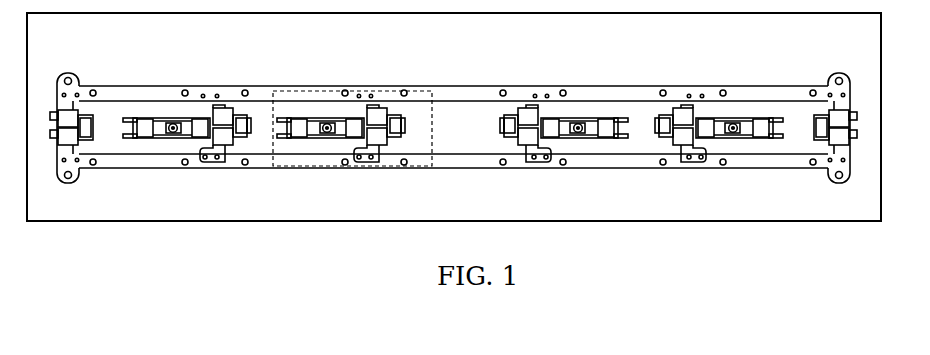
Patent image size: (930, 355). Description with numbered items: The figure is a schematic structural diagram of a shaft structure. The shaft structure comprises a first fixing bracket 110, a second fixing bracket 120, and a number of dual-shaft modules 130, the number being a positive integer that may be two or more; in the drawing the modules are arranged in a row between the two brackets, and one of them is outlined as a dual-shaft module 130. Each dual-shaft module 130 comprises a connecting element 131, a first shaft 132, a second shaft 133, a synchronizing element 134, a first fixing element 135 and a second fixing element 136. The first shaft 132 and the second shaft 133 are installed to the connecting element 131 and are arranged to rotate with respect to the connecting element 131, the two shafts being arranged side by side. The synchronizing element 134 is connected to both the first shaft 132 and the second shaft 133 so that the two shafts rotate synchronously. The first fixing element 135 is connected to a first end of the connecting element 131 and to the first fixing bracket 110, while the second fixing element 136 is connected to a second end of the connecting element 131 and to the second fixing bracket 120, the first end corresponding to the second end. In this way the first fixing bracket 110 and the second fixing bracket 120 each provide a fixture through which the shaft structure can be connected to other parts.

The first fixing bracket 110 is at (118, 95).
The second fixing bracket 120 is at (118, 163).
The dual-shaft module 130 is at (376, 100).
The connecting element 131 is at (248, 142).
The first shaft 132 is at (226, 128).
The second shaft 133 is at (167, 138).
The synchronizing element 134 is at (293, 130).
The first fixing element 135 is at (218, 107).
The second fixing element 136 is at (220, 160).